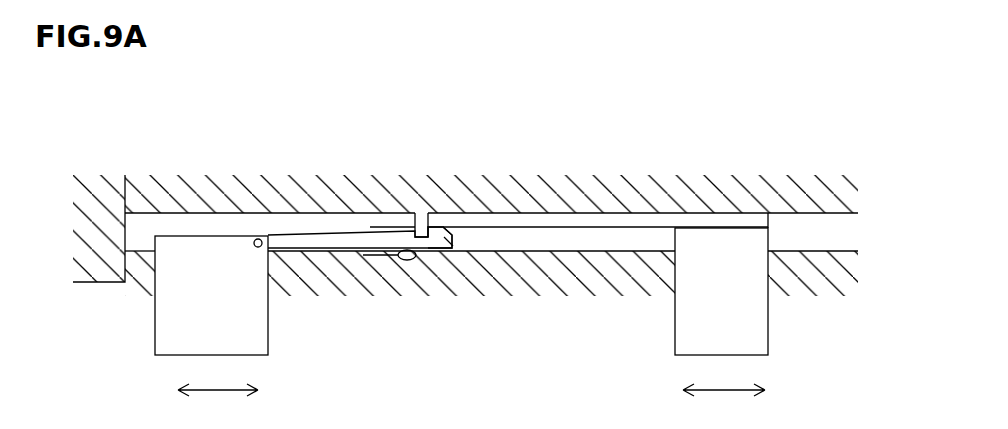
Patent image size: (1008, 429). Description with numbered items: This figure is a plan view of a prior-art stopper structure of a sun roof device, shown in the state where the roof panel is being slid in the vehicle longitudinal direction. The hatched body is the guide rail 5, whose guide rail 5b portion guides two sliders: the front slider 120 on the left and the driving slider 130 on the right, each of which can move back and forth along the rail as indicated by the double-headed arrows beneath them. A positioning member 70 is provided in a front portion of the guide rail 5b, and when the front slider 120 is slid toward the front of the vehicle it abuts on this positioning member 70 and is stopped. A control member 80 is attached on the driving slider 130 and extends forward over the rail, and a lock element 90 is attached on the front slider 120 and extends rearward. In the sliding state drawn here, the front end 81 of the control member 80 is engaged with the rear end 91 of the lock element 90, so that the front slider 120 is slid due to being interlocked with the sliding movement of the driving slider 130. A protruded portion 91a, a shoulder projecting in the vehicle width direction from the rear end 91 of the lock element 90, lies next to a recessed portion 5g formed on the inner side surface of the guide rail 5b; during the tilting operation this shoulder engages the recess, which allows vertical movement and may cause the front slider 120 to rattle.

The guide rail 5 is at (713, 170).
The guide rail 5b is at (814, 225).
The recessed portion 5g is at (403, 258).
The positioning member 70 is at (92, 265).
The control member 80 is at (568, 222).
The front end 81 is at (422, 212).
The lock element 90 is at (363, 242).
The rear end 91 is at (447, 240).
The protruded portion 91a is at (437, 245).
The front slider 120 is at (167, 333).
The driving slider 130 is at (755, 331).